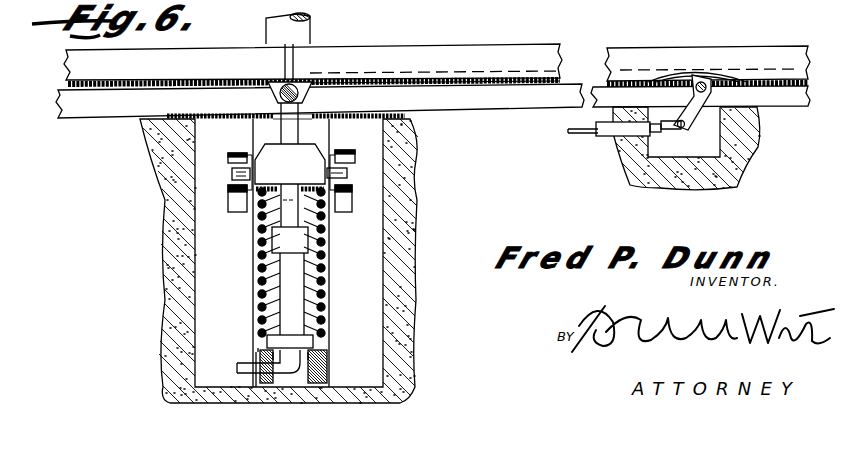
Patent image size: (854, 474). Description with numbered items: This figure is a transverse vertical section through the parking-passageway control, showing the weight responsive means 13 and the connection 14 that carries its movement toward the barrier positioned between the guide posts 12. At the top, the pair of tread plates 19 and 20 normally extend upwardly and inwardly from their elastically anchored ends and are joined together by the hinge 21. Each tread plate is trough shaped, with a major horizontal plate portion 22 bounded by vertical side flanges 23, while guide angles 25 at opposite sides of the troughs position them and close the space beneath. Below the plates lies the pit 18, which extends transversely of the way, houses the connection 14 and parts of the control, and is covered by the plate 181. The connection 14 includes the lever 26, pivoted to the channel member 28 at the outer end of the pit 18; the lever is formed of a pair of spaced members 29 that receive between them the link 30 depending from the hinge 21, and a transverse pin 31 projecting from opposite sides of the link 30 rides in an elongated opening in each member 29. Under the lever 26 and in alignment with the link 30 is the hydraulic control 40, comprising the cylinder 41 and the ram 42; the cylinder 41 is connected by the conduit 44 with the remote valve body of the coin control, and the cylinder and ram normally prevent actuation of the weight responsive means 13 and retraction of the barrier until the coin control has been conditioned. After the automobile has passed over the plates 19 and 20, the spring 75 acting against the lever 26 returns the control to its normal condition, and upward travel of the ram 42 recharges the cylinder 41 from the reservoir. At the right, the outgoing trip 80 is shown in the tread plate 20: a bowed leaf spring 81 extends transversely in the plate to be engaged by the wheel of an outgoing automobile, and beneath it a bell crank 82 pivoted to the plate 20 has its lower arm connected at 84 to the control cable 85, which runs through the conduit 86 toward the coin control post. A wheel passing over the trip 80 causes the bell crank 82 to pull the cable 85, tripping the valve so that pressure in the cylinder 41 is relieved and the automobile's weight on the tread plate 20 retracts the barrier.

The guide post 12 is at (310, 24).
The weight responsive means 13 is at (455, 45).
The connection 14 is at (216, 212).
The pit 18 is at (205, 292).
The tread plate 19 is at (214, 78).
The tread plate 20 is at (368, 78).
The hinge 21 is at (300, 80).
The horizontal plate portion 22 is at (490, 73).
The vertical side flange 23 is at (530, 60).
The guide angle 25 is at (570, 76).
The lever 26 is at (222, 157).
The channel member 28 is at (314, 266).
The spaced member 29 is at (228, 200).
The link 30 is at (282, 128).
The transverse pin 31 is at (232, 175).
The hydraulic control 40 is at (268, 300).
The cylinder 41 is at (282, 262).
The ram 42 is at (278, 216).
The conduit 44 is at (248, 363).
The spring 75 is at (326, 286).
The trip 80 is at (696, 70).
The bowed leaf spring 81 is at (662, 76).
The bell crank 82 is at (704, 116).
The cable connection 84 is at (738, 150).
The control cable 85 is at (581, 137).
The conduit 86 is at (606, 140).
The plate 181 is at (358, 115).